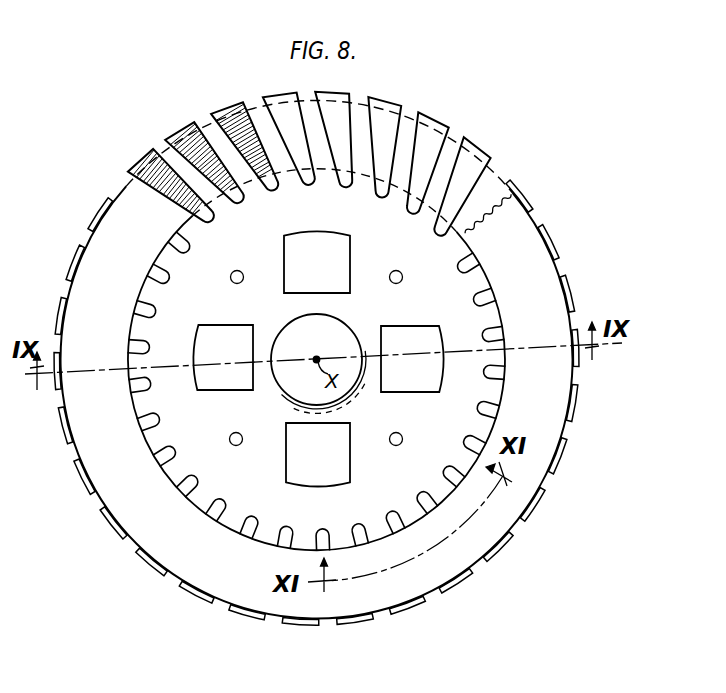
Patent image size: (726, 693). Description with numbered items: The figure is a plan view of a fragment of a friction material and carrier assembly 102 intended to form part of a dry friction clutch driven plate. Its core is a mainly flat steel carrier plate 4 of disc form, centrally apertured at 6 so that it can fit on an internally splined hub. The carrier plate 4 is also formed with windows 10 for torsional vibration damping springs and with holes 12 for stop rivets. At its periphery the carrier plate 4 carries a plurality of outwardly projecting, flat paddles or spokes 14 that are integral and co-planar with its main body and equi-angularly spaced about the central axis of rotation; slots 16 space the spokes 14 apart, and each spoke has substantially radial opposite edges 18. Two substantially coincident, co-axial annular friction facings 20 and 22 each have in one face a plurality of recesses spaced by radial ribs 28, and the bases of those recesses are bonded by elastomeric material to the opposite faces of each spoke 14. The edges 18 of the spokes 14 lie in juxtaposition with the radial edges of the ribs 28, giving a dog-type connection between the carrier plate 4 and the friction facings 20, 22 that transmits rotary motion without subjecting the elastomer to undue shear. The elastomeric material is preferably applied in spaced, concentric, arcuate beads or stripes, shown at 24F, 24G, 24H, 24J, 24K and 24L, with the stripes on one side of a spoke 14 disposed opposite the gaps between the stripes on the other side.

The carrier plate 4 is at (212, 286).
The central aperture 6 is at (336, 329).
The windows 10 is at (201, 381).
The holes 12 is at (236, 445).
The spokes 14 is at (522, 185).
The slots 16 is at (442, 234).
The radial edges of spokes 18 is at (410, 203).
The annular friction facing 20 is at (547, 266).
The annular friction facing 22 is at (437, 229).
The elastomeric stripe 24F is at (257, 184).
The elastomeric stripe 24G is at (235, 206).
The elastomeric stripe 24H is at (258, 134).
The elastomeric stripe 24J is at (215, 136).
The elastomeric stripe 24K is at (262, 128).
The elastomeric stripe 24L is at (237, 106).
The radial ribs 28 is at (162, 162).
The friction material and carrier assembly 102 is at (545, 218).